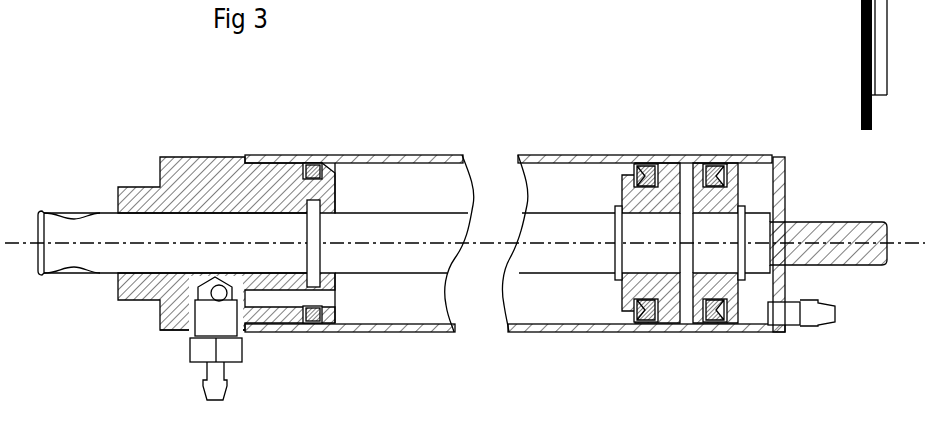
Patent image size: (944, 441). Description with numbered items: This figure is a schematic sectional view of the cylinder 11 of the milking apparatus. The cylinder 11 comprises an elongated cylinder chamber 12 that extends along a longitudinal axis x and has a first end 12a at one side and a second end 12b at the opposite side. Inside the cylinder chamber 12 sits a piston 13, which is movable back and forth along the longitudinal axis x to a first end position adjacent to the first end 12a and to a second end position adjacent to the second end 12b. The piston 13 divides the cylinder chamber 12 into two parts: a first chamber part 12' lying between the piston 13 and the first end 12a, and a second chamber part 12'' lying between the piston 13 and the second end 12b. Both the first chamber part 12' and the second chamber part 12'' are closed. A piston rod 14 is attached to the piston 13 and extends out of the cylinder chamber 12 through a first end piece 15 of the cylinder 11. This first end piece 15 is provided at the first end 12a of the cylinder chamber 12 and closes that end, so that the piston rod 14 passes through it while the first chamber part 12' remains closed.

The cylinder 11 is at (437, 155).
The cylinder chamber 12 is at (567, 224).
The first chamber part 12' is at (401, 243).
The second chamber part 12'' is at (816, 220).
The first end 12a is at (331, 150).
The second end 12b is at (763, 150).
The piston 13 is at (668, 185).
The piston rod 14 is at (90, 231).
The first end piece 15 is at (213, 170).
The longitudinal axis x is at (483, 243).